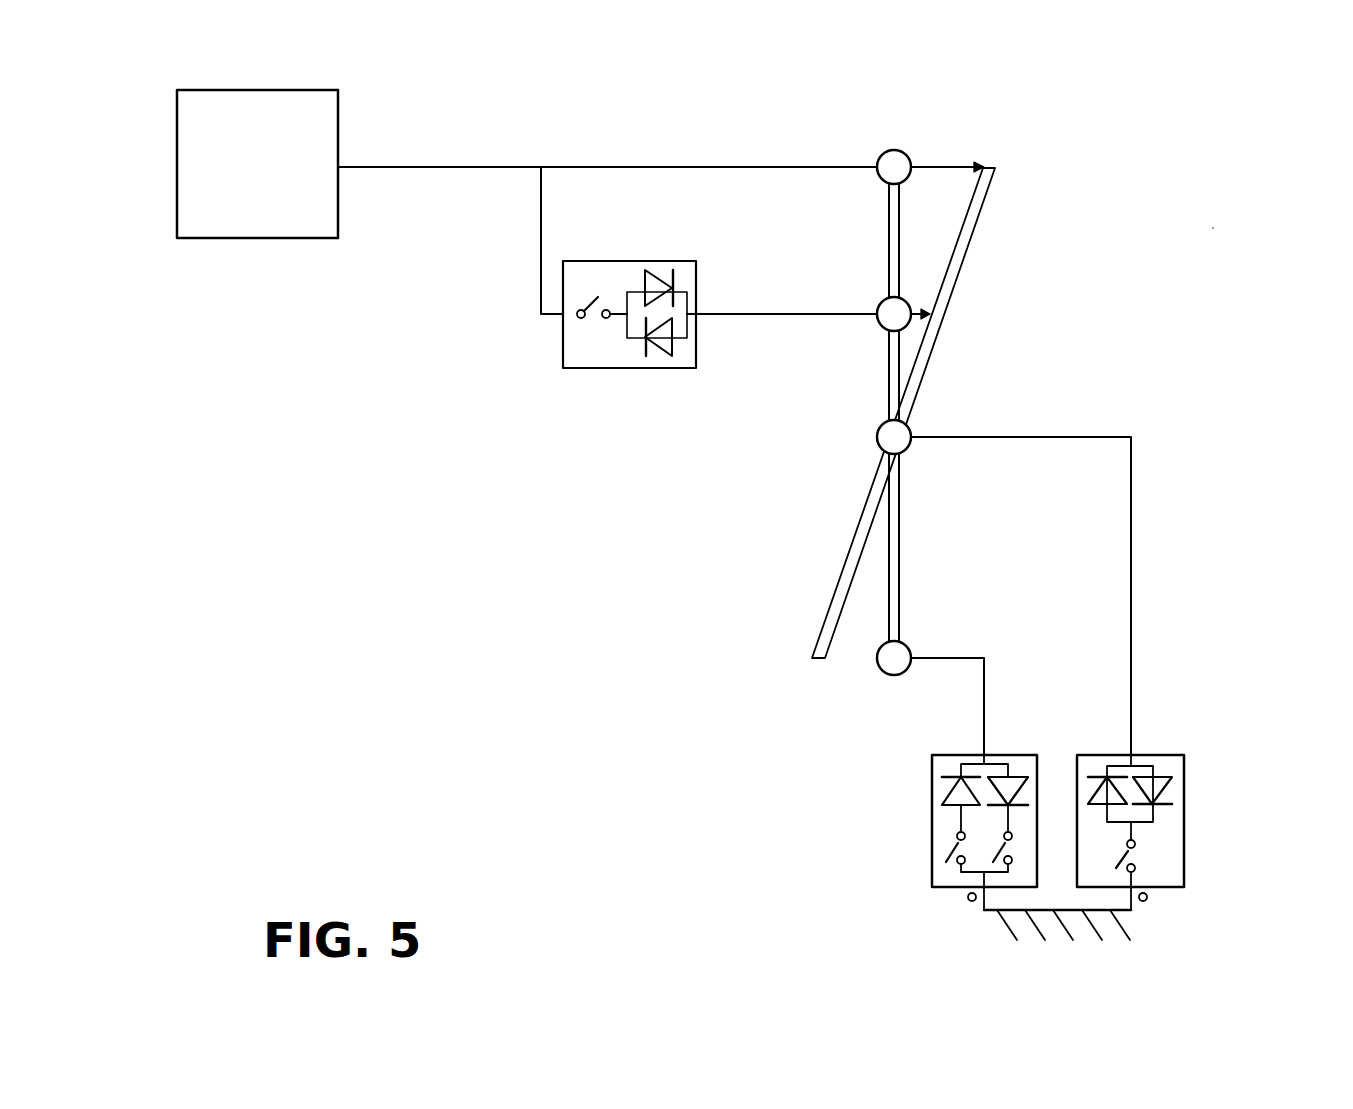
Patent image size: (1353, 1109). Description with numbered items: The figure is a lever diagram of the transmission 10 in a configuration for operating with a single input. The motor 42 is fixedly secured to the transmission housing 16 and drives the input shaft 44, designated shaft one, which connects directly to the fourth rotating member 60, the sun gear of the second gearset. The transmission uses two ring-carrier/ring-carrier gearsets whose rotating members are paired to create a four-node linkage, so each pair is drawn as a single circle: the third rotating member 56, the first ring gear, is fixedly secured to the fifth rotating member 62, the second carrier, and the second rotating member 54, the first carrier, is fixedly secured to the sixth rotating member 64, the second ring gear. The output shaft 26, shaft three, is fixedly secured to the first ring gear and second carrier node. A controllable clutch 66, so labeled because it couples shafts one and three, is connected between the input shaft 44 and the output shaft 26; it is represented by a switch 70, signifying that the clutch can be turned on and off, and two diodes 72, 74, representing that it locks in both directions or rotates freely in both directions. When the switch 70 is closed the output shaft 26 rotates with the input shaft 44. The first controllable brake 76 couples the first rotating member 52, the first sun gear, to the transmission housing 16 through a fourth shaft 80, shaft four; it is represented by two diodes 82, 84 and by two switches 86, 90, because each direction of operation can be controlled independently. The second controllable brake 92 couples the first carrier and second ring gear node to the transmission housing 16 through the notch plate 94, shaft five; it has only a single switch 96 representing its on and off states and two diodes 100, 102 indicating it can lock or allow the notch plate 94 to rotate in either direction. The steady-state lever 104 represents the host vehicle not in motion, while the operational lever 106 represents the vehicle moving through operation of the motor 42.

The transmission 10 is at (1215, 226).
The transmission housing 16 is at (1000, 912).
The output shaft 26 is at (921, 314).
The motor 42 is at (225, 240).
The input shaft 44 is at (403, 169).
The first rotating member 52 is at (878, 660).
The second rotating member 54 is at (877, 440).
The third rotating member 56 is at (880, 326).
The fourth rotating member 60 is at (880, 156).
The fifth rotating member 62 is at (899, 298).
The sixth rotating member 64 is at (905, 428).
The controllable clutch 66 is at (625, 261).
The switch 70 is at (597, 300).
The diode 72 is at (660, 278).
The diode 74 is at (655, 358).
The first controllable brake 76 is at (932, 757).
The fourth shaft 80 is at (963, 655).
The diode 82 is at (950, 790).
The diode 84 is at (1020, 788).
The switch 86 is at (945, 852).
The switch 90 is at (1010, 850).
The second controllable brake 92 is at (1168, 888).
The notch plate 94 is at (1133, 615).
The switch 96 is at (1127, 860).
The diode 100 is at (1093, 790).
The diode 102 is at (1172, 790).
The steady-state lever 104 is at (888, 380).
The operational lever 106 is at (937, 338).